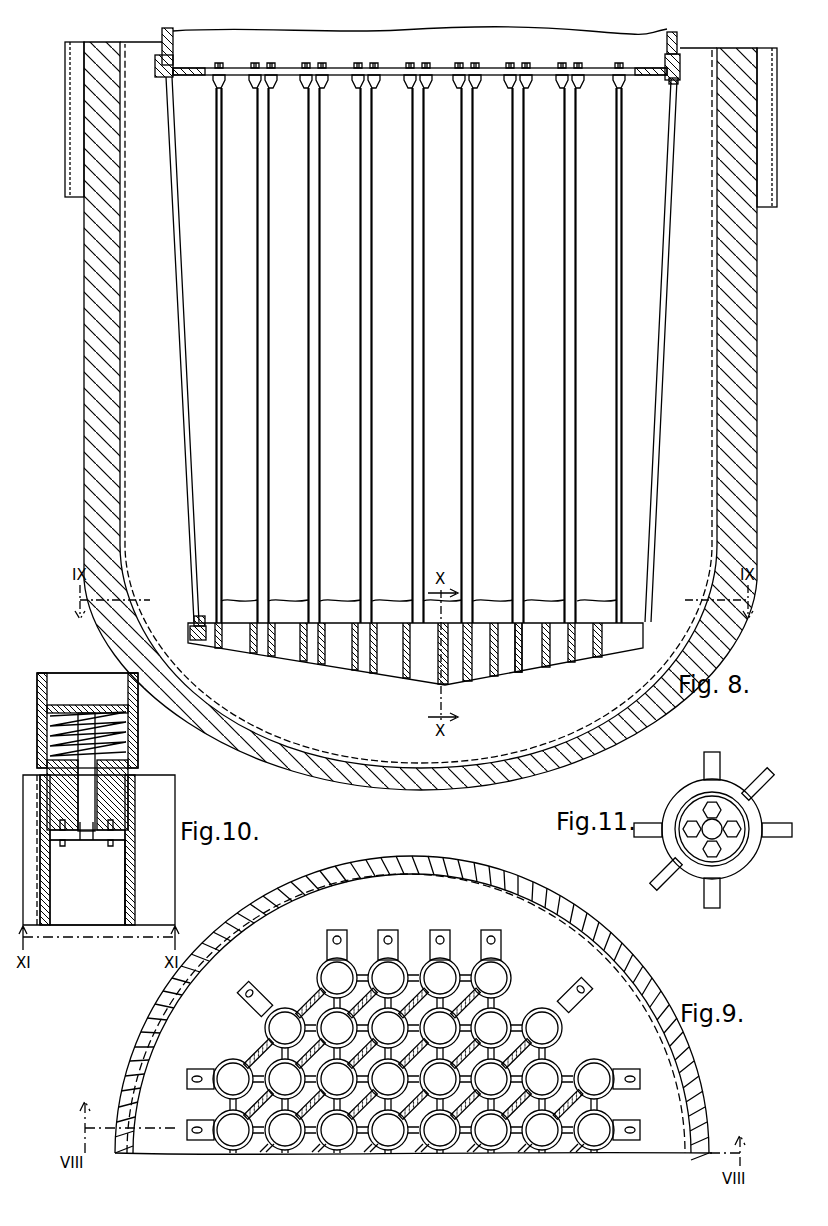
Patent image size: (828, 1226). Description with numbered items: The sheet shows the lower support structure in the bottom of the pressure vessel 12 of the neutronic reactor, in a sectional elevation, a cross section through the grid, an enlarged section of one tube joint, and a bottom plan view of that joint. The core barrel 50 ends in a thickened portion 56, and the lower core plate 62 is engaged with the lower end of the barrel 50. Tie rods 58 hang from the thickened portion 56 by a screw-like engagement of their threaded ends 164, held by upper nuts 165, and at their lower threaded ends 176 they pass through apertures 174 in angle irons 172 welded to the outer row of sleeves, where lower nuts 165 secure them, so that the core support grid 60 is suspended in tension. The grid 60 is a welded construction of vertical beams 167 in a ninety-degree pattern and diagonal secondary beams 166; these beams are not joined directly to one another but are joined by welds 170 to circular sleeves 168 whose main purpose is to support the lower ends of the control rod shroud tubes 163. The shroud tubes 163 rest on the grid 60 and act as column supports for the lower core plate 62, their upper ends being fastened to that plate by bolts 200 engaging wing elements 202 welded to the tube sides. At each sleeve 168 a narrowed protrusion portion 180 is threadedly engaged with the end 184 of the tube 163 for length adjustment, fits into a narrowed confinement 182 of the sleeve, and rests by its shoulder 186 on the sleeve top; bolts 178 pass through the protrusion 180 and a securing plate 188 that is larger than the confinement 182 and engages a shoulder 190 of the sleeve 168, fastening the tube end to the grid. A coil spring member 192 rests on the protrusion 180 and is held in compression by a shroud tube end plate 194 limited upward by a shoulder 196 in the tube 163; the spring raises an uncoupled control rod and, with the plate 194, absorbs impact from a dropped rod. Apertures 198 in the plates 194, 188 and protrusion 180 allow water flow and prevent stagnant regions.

In FIG. 8, the pressure vessel 12 is at (752, 318).
In FIG. 8, the core barrel 50 is at (161, 42).
In FIG. 8, the thickened portion 56 is at (680, 60).
In FIG. 8, the tie rod 58 is at (180, 206).
In FIG. 9, the tie rod 58 is at (573, 992).
In FIG. 8, the core support grid 60 is at (387, 672).
In FIG. 8, the lower core plate 62 is at (400, 68).
In FIG. 8, the control rod shroud tube 163 is at (224, 142).
In FIG. 10, the control rod shroud tube 163 is at (40, 675).
In FIG. 8, the threaded end 164 is at (662, 66).
In FIG. 8, the nut 165 is at (196, 624).
In FIG. 8, the secondary beam 166 is at (465, 676).
In FIG. 10, the secondary beam 166 is at (175, 878).
In FIG. 11, the secondary beam 166 is at (760, 782).
In FIG. 9, the secondary beam 166 is at (550, 1052).
In FIG. 8, the beam 167 is at (532, 668).
In FIG. 10, the beam 167 is at (30, 903).
In FIG. 11, the beam 167 is at (705, 760).
In FIG. 9, the beam 167 is at (466, 966).
In FIG. 10, the circular sleeve 168 is at (42, 916).
In FIG. 9, the circular sleeve 168 is at (318, 976).
In FIG. 11, the weld 170 is at (696, 876).
In FIG. 9, the angle iron 172 is at (330, 962).
In FIG. 9, the aperture 174 is at (333, 942).
In FIG. 8, the lower threaded end 176 is at (199, 642).
In FIG. 10, the bolt 178 is at (105, 850).
In FIG. 11, the bolt 178 is at (692, 810).
In FIG. 10, the protrusion portion 180 is at (128, 804).
In FIG. 10, the narrowed confinement 182 is at (116, 850).
In FIG. 10, the shroud tube end 184 is at (132, 772).
In FIG. 10, the shoulder 186 is at (128, 788).
In FIG. 10, the securing plate 188 is at (125, 832).
In FIG. 10, the shoulder 190 is at (135, 862).
In FIG. 10, the coil spring member 192 is at (130, 716).
In FIG. 10, the shroud tube end plate 194 is at (133, 675).
In FIG. 10, the shoulder 196 is at (52, 706).
In FIG. 10, the aperture 198 is at (86, 712).
In FIG. 11, the aperture 198 is at (716, 833).
In FIG. 8, the bolt 200 is at (253, 62).
In FIG. 8, the wing element 202 is at (248, 90).